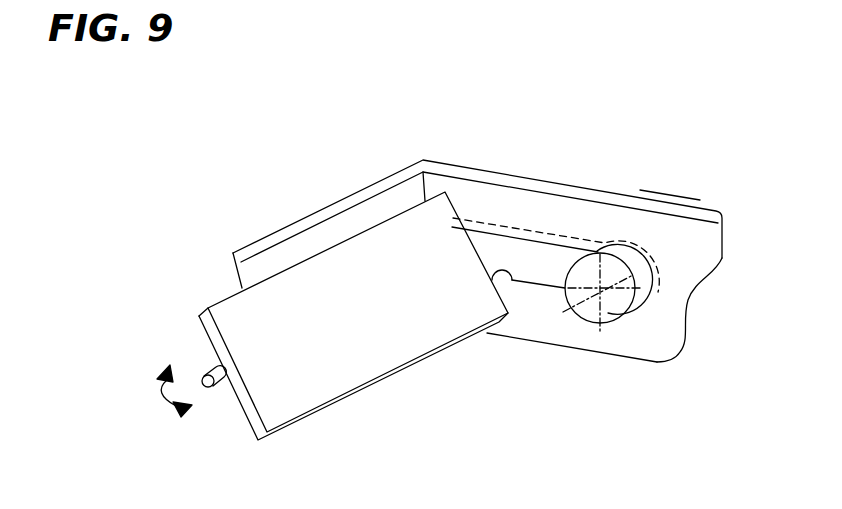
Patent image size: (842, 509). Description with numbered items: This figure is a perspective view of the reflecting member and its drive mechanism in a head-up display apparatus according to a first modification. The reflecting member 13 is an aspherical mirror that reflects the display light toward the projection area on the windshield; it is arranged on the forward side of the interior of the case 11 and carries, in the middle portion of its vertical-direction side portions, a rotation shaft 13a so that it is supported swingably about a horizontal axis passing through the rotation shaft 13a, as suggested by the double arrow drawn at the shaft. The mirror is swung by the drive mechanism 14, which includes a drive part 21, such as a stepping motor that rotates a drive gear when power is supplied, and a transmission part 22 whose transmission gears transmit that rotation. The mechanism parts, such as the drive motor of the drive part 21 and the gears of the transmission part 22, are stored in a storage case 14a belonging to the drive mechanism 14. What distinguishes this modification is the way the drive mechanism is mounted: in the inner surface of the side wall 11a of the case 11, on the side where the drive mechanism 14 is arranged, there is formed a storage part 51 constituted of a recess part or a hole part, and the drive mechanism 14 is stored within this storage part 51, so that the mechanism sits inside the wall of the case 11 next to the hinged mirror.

The case 11 is at (328, 205).
The side wall 11a is at (608, 212).
The reflecting member 13 is at (265, 400).
The rotation shaft 13a is at (203, 377).
The drive mechanism 14 is at (500, 220).
The storage case 14a is at (556, 230).
The drive part 21 is at (608, 323).
The transmission part 22 is at (532, 278).
The storage part 51 is at (492, 285).